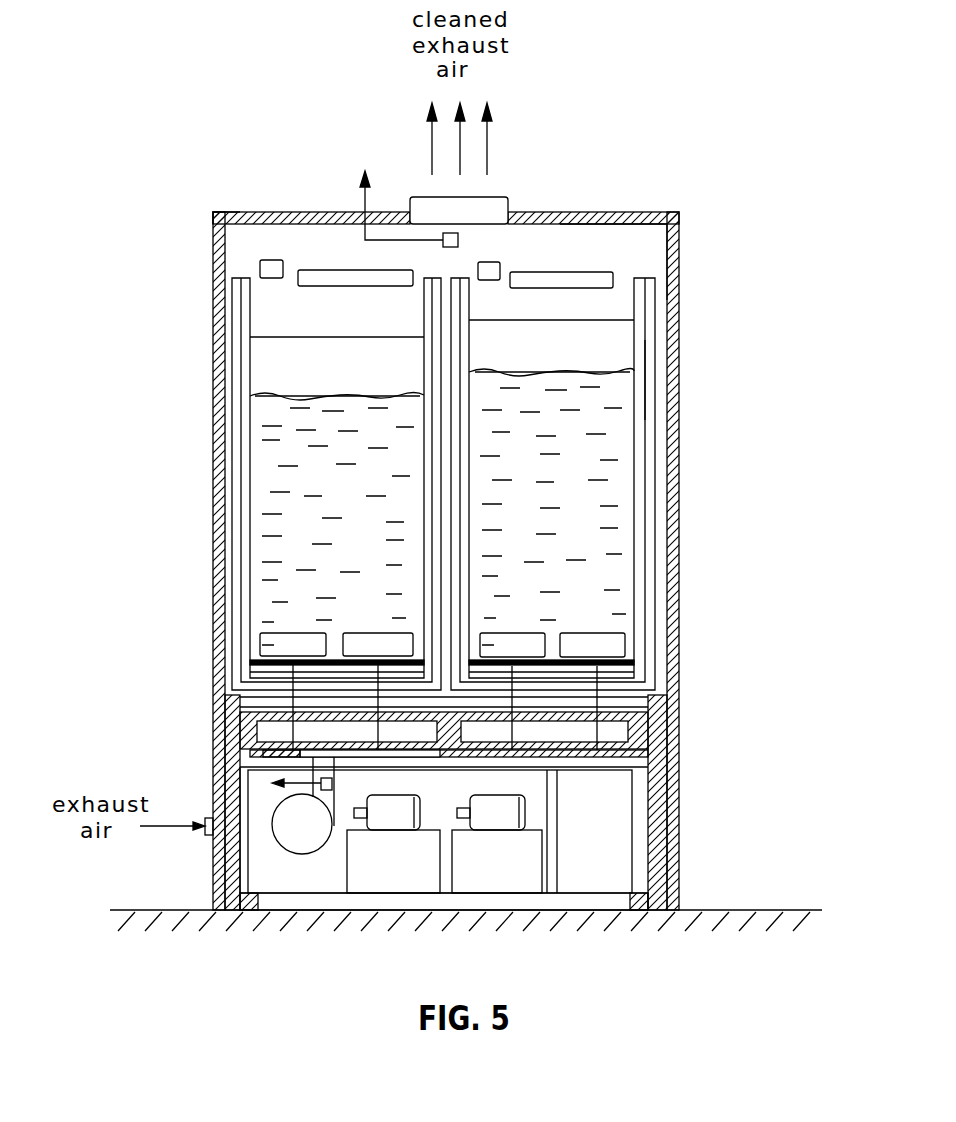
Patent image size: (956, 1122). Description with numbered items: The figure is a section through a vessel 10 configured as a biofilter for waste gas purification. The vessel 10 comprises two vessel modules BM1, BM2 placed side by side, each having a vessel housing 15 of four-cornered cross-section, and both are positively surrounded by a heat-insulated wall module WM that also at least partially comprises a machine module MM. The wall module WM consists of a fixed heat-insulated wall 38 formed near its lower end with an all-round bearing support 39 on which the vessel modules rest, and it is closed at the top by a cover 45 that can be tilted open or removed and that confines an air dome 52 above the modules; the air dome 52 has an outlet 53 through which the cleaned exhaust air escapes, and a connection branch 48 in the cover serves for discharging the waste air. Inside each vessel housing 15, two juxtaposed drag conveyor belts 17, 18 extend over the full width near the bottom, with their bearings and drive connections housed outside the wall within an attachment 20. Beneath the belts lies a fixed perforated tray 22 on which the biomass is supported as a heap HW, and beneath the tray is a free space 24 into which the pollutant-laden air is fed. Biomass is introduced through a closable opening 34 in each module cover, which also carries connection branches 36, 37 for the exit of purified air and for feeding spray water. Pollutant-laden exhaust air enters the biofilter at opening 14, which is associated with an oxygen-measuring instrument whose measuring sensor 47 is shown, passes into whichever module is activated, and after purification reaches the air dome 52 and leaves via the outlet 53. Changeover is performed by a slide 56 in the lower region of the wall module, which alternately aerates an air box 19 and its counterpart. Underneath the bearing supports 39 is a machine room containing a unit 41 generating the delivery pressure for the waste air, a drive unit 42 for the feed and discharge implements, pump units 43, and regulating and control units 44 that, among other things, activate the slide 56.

The vessel 10 is at (736, 340).
The opening 14 is at (208, 838).
The vessel housing 15 is at (250, 358).
The drag conveyor belt 17 is at (366, 640).
The drag conveyor belt 18 is at (290, 640).
The air box 19 is at (245, 730).
The attachment 20 is at (632, 730).
The perforated tray 22 is at (253, 660).
The free space 24 is at (257, 672).
The closable opening 34 is at (348, 286).
The connection branch 36 is at (270, 264).
The connection branch 37 is at (490, 268).
The heat-insulated wall 38 is at (213, 590).
The bearing support 39 is at (662, 694).
The unit for generating delivery pressure 41 is at (296, 832).
The drive unit 42 is at (393, 880).
The pump unit 43 is at (488, 880).
The regulating and control unit 44 is at (600, 880).
The cover 45 is at (233, 212).
The measuring sensor 47 is at (333, 783).
The connection branch 48 is at (447, 233).
The air dome 52 is at (625, 240).
The outlet 53 is at (498, 207).
The slide 56 is at (268, 756).
The vessel module BM1 is at (273, 418).
The vessel module BM2 is at (612, 454).
The heap HW is at (340, 512).
The wall module WM is at (681, 569).
The machine module MM is at (322, 893).